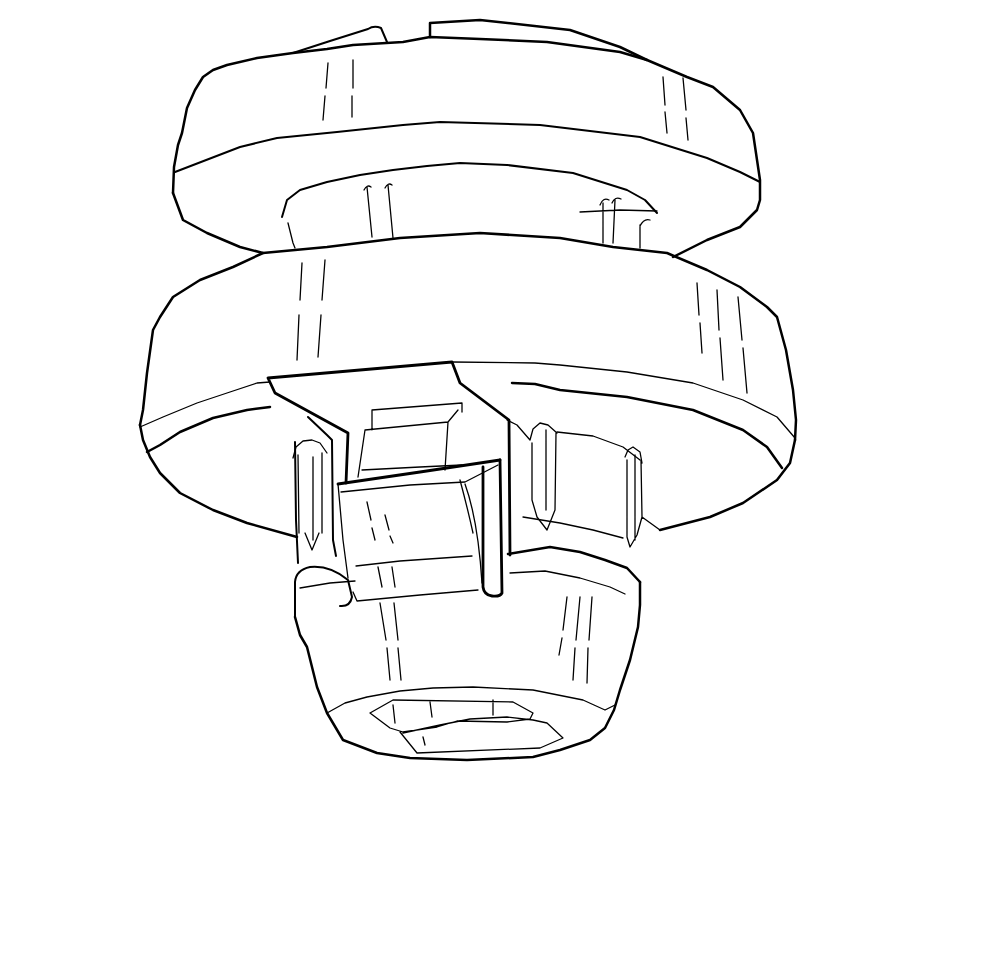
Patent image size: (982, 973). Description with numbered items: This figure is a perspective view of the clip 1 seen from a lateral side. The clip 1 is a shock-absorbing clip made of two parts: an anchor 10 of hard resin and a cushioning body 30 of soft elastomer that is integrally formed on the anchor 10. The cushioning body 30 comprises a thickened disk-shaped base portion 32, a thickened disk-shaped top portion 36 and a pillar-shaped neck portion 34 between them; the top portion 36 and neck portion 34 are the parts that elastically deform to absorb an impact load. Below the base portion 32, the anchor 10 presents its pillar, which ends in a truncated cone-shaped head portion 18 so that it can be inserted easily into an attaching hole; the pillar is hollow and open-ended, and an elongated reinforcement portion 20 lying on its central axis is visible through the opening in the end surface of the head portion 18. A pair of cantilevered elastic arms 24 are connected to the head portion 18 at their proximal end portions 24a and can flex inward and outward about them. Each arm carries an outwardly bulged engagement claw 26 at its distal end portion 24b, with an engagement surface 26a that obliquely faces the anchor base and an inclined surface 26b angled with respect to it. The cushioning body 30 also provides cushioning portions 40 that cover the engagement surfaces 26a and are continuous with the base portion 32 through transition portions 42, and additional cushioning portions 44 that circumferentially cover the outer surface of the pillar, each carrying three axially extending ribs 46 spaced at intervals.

The clip 1 is at (767, 84).
The anchor 10 is at (648, 640).
The head portion 18 is at (337, 660).
The reinforcement portion 20 is at (467, 730).
The elastic arms 24 is at (372, 540).
The proximal end portions 24a is at (330, 630).
The distal end portions 24b is at (488, 600).
The engagement claws 26 is at (340, 490).
The engagement surfaces 26a is at (468, 462).
The inclined surfaces 26b is at (421, 496).
The cushioning body 30 is at (123, 151).
The base portion 32 is at (182, 326).
The neck portion 34 is at (657, 211).
The top portion 36 is at (700, 108).
The cushioning portions 40 is at (400, 448).
The transition portions 42 is at (437, 413).
The cushioning portions 44 is at (597, 485).
The ribs 46 is at (297, 460).